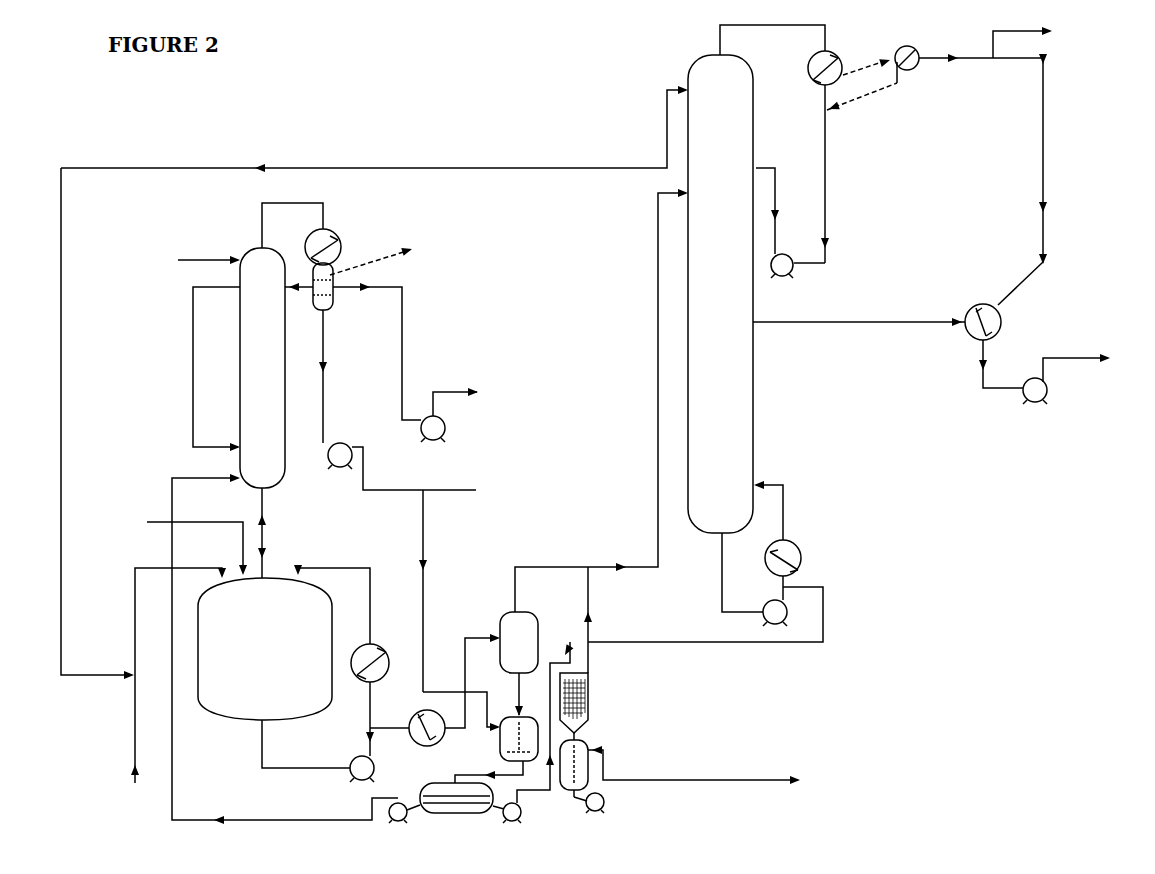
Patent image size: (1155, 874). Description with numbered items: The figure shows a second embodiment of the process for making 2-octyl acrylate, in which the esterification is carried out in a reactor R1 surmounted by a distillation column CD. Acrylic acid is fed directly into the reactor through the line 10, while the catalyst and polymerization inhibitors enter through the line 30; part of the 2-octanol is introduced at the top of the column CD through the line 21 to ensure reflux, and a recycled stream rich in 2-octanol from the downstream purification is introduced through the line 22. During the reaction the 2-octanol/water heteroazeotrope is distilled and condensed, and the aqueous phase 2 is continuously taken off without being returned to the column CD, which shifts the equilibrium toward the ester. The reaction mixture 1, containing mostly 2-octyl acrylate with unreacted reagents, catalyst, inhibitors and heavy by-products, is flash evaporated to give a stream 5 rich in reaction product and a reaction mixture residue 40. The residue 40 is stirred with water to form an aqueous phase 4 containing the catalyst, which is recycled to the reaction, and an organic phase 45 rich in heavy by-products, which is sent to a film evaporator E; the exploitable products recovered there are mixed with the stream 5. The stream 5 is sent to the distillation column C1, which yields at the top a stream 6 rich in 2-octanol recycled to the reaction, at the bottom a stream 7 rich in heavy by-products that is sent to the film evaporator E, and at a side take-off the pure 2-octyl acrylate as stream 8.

The reaction mixture 1 is at (435, 690).
The aqueous phase 2 is at (411, 520).
The aqueous phase 4 is at (296, 649).
The stream rich in reaction product 5 is at (601, 400).
The stream rich in 2-octanol 6 is at (374, 129).
The stream rich in heavy by-products 7 is at (705, 561).
The pure 2-octyl acrylate stream 8 is at (945, 354).
The line 10 is at (177, 687).
The line 21 is at (193, 260).
The line 22 is at (97, 439).
The line 30 is at (179, 544).
The reaction mixture residue 40 is at (515, 686).
The organic phase 45 is at (496, 732).
The distillation column CD is at (262, 368).
The reactor R1 is at (265, 649).
The distillation column C1 is at (720, 294).
The film evaporator E is at (680, 690).